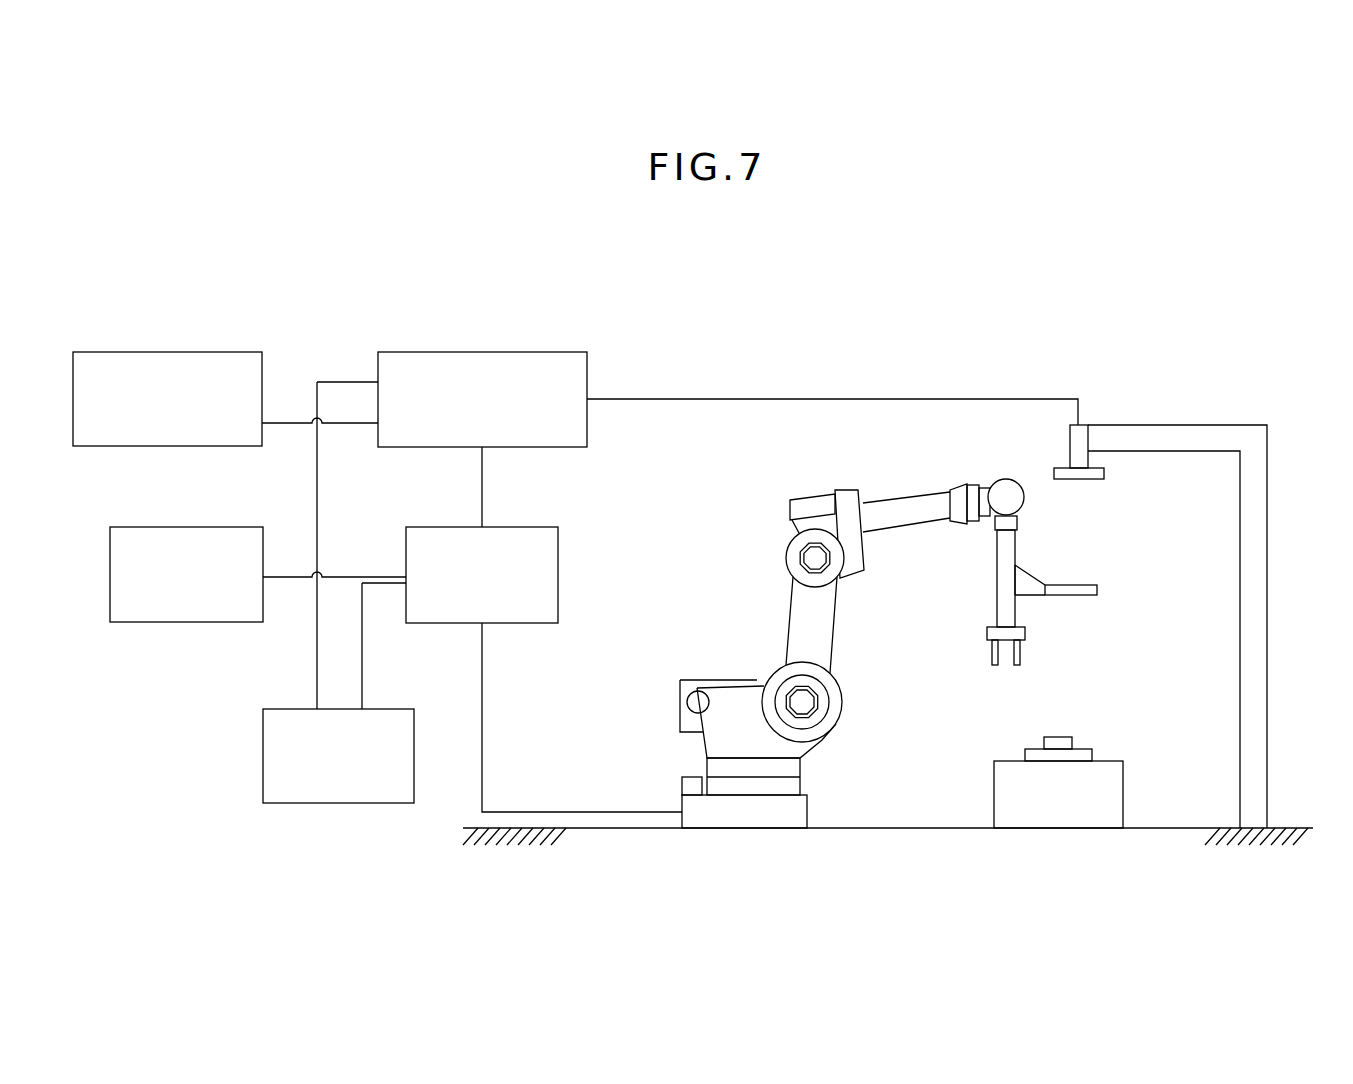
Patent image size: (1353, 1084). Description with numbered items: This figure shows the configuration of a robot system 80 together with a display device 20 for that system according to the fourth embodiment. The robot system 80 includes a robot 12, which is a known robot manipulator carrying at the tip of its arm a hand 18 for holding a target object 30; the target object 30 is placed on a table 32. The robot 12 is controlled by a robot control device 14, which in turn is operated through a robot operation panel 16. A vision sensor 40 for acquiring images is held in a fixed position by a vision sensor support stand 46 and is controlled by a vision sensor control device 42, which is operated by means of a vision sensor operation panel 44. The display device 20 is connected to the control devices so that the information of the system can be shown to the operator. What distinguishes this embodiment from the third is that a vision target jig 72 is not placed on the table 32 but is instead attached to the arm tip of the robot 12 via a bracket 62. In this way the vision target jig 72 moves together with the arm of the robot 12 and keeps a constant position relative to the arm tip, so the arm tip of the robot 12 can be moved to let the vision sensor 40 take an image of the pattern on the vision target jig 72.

The robot 12 is at (755, 617).
The robot control device 14 is at (550, 527).
The robot operation panel 16 is at (242, 527).
The hand 18 is at (990, 656).
The display device 20 is at (400, 709).
The target object 30 is at (1083, 720).
The table 32 is at (1123, 785).
The vision sensor 40 is at (1089, 440).
The vision sensor control device 42 is at (540, 352).
The vision sensor operation panel 44 is at (230, 352).
The vision sensor support stand 46 is at (1215, 425).
The bracket 62 is at (1036, 572).
The vision target jig 72 is at (1102, 586).
The robot system 80 is at (983, 372).